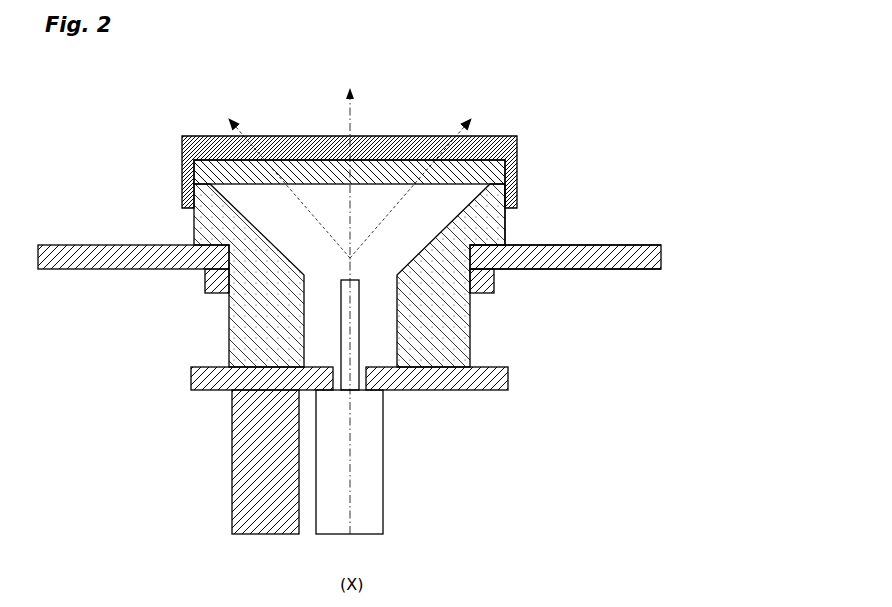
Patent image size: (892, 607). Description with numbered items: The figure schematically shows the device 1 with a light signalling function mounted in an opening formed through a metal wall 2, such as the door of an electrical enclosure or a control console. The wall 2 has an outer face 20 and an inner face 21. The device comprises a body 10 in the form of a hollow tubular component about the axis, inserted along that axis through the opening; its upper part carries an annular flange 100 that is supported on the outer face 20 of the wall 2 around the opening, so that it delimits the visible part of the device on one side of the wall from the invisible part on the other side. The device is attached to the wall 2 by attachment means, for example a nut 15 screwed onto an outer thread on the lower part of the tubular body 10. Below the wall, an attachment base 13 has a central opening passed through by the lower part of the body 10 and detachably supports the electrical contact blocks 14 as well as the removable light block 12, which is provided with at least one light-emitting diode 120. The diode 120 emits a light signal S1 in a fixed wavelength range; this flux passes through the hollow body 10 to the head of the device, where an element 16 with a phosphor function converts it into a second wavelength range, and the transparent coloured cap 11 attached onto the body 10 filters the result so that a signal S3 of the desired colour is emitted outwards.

The device 1 is at (156, 138).
The metal wall 2 is at (658, 262).
The body 10 is at (254, 345).
The cap 11 is at (517, 166).
The light block 12 is at (367, 488).
The attachment base 13 is at (500, 383).
The electrical contact block 14 is at (272, 467).
The nut 15 is at (495, 289).
The element with a phosphor function 16 is at (412, 176).
The outer face 20 is at (647, 243).
The inner face 21 is at (649, 269).
The annular flange 100 is at (506, 232).
The light-emitting diode 120 is at (353, 335).
The light signal S1 is at (349, 269).
The light signal emitted outwards S3 is at (350, 84).